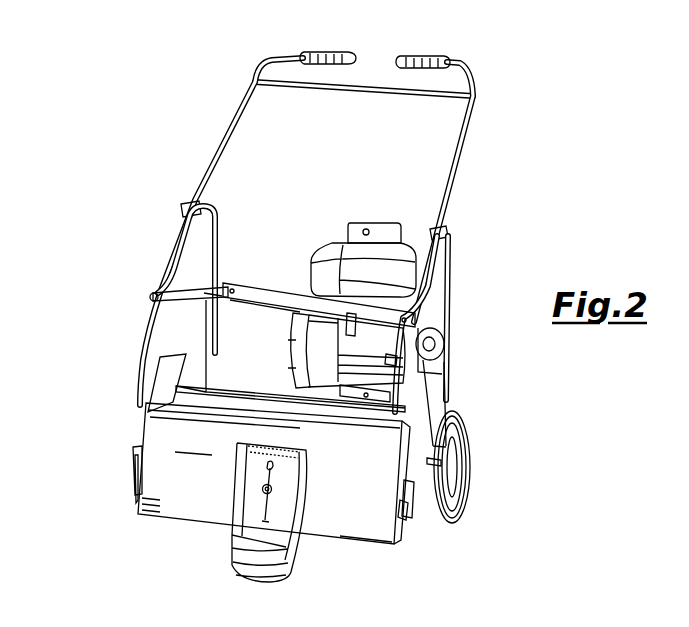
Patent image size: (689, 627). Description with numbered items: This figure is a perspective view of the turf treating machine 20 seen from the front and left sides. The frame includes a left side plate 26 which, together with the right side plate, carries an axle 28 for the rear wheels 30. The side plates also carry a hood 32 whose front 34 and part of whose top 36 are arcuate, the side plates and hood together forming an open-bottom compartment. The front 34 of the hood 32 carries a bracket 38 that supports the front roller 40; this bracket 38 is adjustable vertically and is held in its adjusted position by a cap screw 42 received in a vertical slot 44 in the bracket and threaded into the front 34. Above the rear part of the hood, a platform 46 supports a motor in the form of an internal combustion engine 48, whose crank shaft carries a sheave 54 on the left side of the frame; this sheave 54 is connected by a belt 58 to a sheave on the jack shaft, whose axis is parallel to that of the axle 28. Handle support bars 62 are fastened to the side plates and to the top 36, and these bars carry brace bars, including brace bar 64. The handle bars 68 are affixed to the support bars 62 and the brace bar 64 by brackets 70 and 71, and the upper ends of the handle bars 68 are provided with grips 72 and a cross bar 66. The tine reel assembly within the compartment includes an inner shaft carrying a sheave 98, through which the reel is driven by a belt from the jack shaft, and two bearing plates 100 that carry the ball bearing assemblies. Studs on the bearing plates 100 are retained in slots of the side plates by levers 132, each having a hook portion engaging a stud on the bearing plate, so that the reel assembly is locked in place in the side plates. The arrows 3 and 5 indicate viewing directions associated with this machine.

The direction arrow 3 is at (518, 425).
The direction arrow 5 is at (100, 370).
The machine 20 is at (185, 525).
The left side plate 26 is at (404, 531).
The axle 28 is at (460, 464).
The rear wheels 30 is at (143, 413).
The hood 32 is at (350, 515).
The front 34 is at (162, 496).
The top 36 is at (211, 405).
The bracket 38 is at (284, 466).
The front roller 40 is at (240, 578).
The cap screw 42 is at (272, 493).
The vertical slot 44 is at (274, 482).
The platform 46 is at (241, 360).
The internal combustion engine 48 is at (300, 368).
The sheave 54 is at (446, 340).
The belt 58 is at (443, 378).
The handle support bars 62 is at (218, 228).
The brace bar 64 is at (186, 298).
The cross bar 66 is at (383, 100).
The handle bars 68 is at (236, 120).
The bracket 70 is at (268, 284).
The bracket 71 is at (190, 203).
The grips 72 is at (340, 52).
The sheave 98 is at (133, 478).
The bearing plates 100 is at (414, 510).
The levers 132 is at (403, 530).